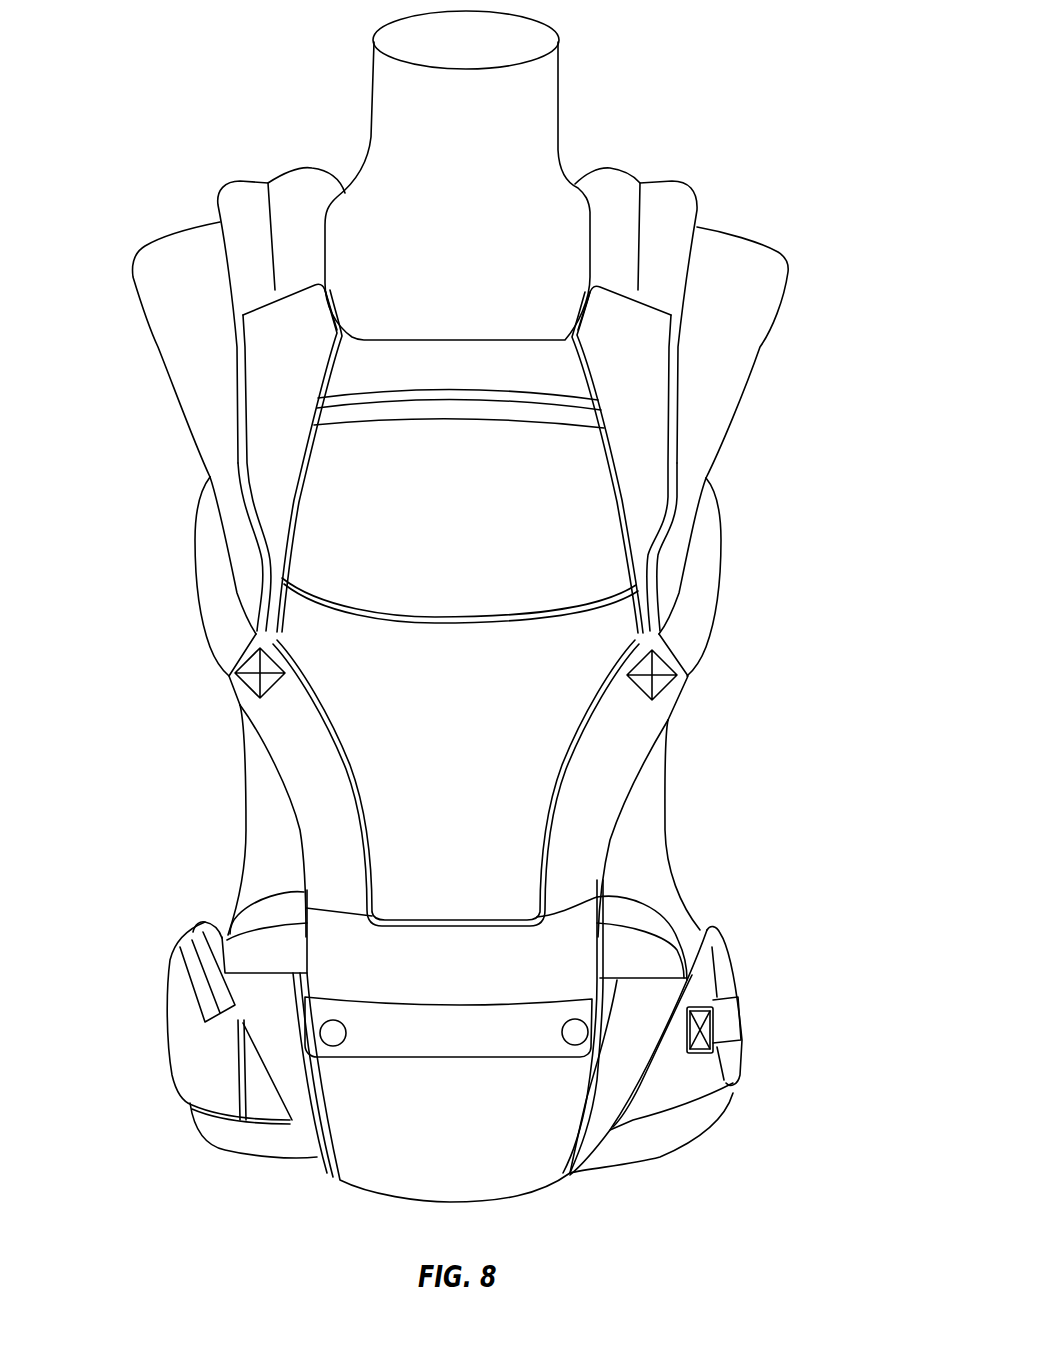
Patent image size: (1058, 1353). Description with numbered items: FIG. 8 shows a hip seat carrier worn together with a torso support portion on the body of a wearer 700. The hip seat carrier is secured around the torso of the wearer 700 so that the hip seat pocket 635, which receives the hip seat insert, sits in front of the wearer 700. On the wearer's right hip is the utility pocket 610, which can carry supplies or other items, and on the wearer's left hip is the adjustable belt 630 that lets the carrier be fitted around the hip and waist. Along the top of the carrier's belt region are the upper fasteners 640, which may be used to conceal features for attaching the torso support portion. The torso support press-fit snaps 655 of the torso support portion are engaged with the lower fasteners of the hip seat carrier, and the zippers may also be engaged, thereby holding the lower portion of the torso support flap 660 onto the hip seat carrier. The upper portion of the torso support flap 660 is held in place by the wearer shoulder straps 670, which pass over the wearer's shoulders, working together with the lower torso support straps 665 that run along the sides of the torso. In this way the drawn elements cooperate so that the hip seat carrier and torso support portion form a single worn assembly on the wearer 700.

The wearer 700 is at (737, 313).
The wearer shoulder straps 670 is at (248, 200).
The lower torso support straps 665 is at (212, 587).
The torso support flap 660 is at (507, 820).
The upper fasteners 640 is at (632, 917).
The torso support press-fit snaps 655 is at (335, 1030).
The adjustable belt 630 is at (733, 1023).
The utility pocket 610 is at (182, 1019).
The hip seat pocket 635 is at (525, 1165).